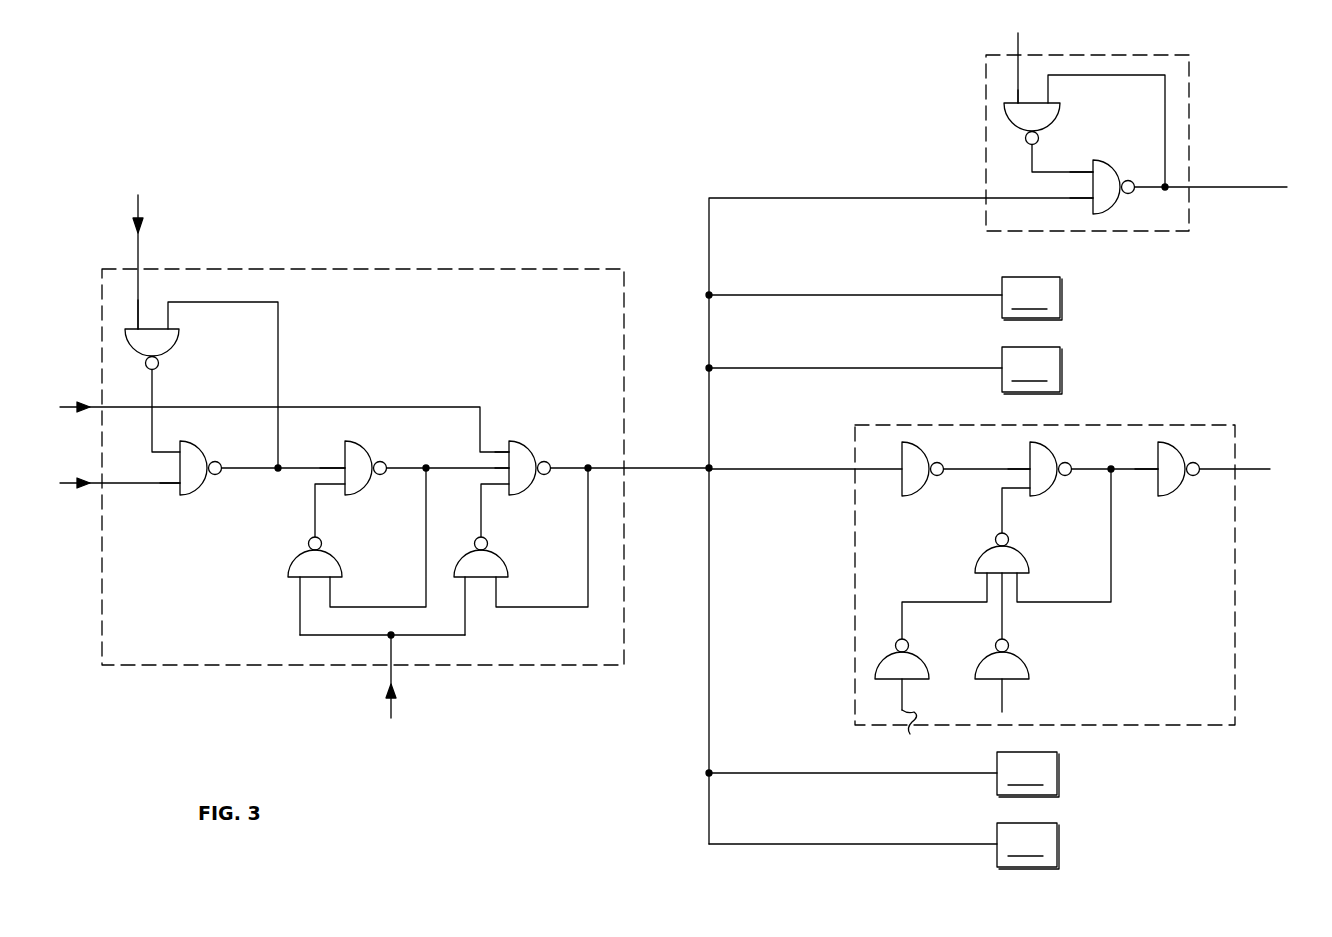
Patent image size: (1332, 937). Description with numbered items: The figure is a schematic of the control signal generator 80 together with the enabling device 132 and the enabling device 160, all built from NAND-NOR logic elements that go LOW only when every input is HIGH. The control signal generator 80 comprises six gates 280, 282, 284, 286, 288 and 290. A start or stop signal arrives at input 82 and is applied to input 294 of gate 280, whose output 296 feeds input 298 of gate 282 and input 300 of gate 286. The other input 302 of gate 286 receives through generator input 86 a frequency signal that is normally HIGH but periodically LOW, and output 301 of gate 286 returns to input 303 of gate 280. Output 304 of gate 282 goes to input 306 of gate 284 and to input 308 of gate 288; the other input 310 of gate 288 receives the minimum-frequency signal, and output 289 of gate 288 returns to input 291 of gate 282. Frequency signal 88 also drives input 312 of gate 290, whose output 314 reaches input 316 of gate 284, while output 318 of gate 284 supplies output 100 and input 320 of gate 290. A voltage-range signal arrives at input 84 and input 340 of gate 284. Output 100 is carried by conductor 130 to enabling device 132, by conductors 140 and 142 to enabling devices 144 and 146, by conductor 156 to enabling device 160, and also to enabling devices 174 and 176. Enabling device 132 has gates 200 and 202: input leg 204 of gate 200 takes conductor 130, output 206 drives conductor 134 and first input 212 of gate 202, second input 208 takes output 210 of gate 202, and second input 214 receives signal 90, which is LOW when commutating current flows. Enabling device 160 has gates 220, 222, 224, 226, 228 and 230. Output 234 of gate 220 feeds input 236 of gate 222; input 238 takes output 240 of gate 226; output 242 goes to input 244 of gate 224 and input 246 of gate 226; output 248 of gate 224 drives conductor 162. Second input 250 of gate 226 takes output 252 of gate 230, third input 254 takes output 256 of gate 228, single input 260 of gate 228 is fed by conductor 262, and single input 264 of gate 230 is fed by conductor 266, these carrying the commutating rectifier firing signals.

The control signal generator 80 is at (373, 270).
The input 82 is at (70, 483).
The input 84 is at (70, 408).
The generator input 86 is at (143, 223).
The frequency signal 88 is at (389, 690).
The input 90 is at (1044, 64).
The output 100 is at (660, 468).
The conductor 130 is at (854, 196).
The enabling device 132 is at (1196, 76).
The conductor 134 is at (1267, 190).
The conductor 140 is at (874, 298).
The conductor 142 is at (874, 373).
The enabling device 144 is at (1032, 298).
The enabling device 146 is at (1032, 370).
The conductor 156 is at (781, 475).
The enabling device 160 is at (1140, 424).
The conductor 162 is at (1298, 468).
The enabling device 174 is at (882, 774).
The enabling device 176 is at (884, 846).
The dual input gate 200 is at (1118, 170).
The dual input gate 202 is at (1054, 111).
The input leg 204 is at (1086, 196).
The output 206 is at (1136, 186).
The second input 208 is at (1088, 172).
The output 210 is at (1030, 140).
The first input 212 is at (1058, 102).
The second input 214 is at (1017, 90).
The gate 220 is at (937, 456).
The dual input gate 222 is at (1063, 456).
The single input gate 224 is at (1190, 456).
The triple input gate 226 is at (1016, 554).
The single input gate 228 is at (921, 663).
The single input gate 230 is at (1031, 667).
The output 234 is at (942, 473).
The input 236 is at (1028, 467).
The input 238 is at (1024, 488).
The output 240 is at (997, 538).
The output 242 is at (1074, 473).
The input 244 is at (1158, 467).
The input 246 is at (1022, 576).
The output 248 is at (1200, 473).
The second input 250 is at (1004, 596).
The output 252 is at (1012, 646).
The third input 254 is at (986, 576).
The output 256 is at (908, 640).
The single input 260 is at (902, 682).
The conductor 262 is at (909, 734).
The single input 264 is at (1002, 682).
The conductor 266 is at (1002, 712).
The dual input gate 280 is at (197, 449).
The dual input gate 282 is at (368, 449).
The triple input gate 284 is at (540, 449).
The dual input gate 286 is at (178, 343).
The dual input gate 288 is at (292, 560).
The output 289 is at (322, 539).
The dual input gate 290 is at (499, 565).
The input 291 is at (315, 485).
The input 294 is at (176, 486).
The output 296 is at (222, 474).
The input 298 is at (342, 466).
The input 300 is at (174, 329).
The output 301 is at (161, 366).
The input 302 is at (144, 324).
The input 303 is at (172, 454).
The output 304 is at (387, 470).
The input 306 is at (500, 474).
The input 308 is at (332, 582).
The input 310 is at (298, 580).
The input 312 is at (466, 580).
The output 314 is at (486, 542).
The input 316 is at (505, 485).
The output 318 is at (550, 470).
The input 320 is at (496, 582).
The input 340 is at (499, 452).